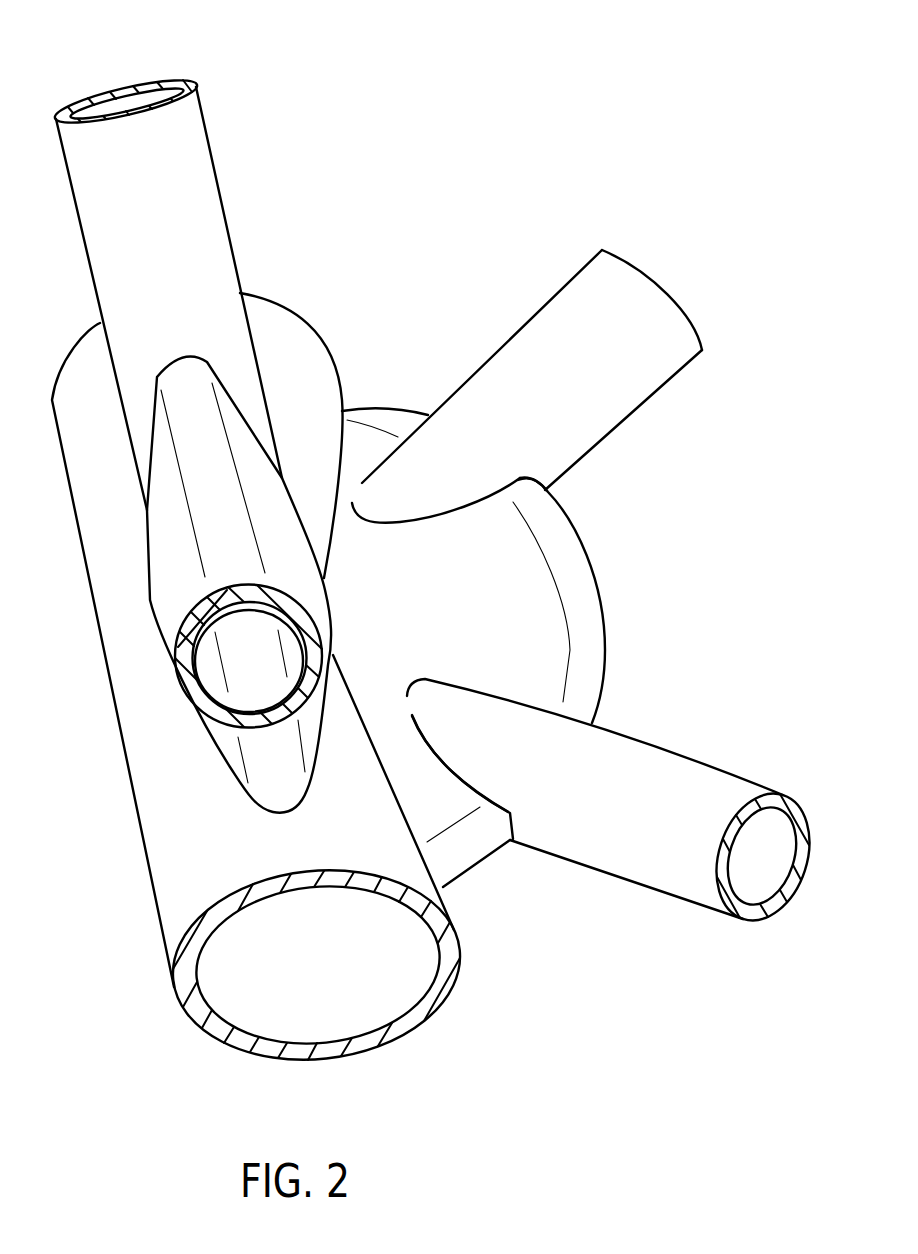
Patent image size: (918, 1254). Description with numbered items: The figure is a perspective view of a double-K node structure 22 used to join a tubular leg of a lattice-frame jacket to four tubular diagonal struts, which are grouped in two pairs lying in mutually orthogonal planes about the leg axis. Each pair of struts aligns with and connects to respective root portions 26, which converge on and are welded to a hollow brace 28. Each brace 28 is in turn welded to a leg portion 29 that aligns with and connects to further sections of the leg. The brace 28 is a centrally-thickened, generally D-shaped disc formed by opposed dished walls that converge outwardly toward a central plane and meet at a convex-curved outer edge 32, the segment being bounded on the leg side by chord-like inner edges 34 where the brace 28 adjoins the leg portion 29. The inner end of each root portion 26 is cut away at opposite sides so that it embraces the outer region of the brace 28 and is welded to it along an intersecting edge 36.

The double-K node structure 22 is at (388, 262).
The root portion 26 is at (207, 205).
The hollow brace 28 is at (300, 582).
The leg portion 29 is at (403, 1000).
The convex-curved outer edge 32 is at (580, 543).
The chord-like inner edge 34 is at (357, 733).
The intersecting edge 36 is at (522, 478).